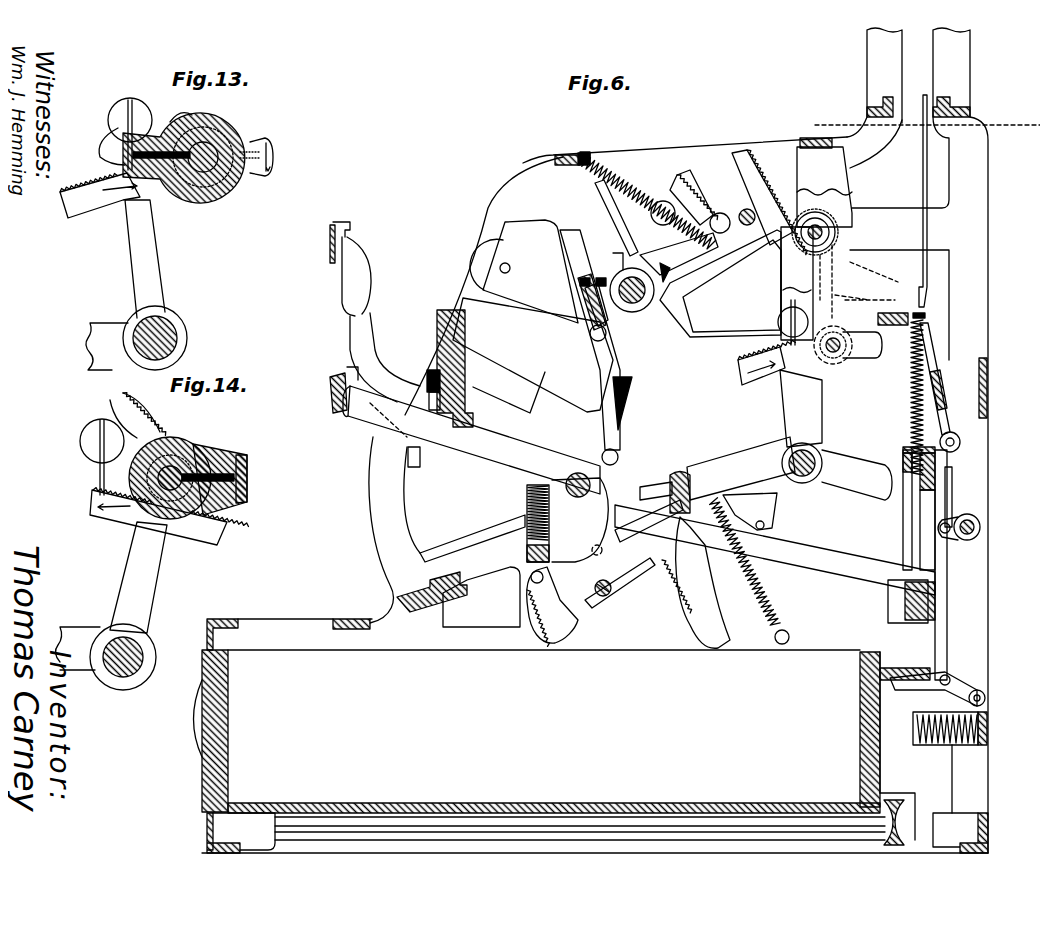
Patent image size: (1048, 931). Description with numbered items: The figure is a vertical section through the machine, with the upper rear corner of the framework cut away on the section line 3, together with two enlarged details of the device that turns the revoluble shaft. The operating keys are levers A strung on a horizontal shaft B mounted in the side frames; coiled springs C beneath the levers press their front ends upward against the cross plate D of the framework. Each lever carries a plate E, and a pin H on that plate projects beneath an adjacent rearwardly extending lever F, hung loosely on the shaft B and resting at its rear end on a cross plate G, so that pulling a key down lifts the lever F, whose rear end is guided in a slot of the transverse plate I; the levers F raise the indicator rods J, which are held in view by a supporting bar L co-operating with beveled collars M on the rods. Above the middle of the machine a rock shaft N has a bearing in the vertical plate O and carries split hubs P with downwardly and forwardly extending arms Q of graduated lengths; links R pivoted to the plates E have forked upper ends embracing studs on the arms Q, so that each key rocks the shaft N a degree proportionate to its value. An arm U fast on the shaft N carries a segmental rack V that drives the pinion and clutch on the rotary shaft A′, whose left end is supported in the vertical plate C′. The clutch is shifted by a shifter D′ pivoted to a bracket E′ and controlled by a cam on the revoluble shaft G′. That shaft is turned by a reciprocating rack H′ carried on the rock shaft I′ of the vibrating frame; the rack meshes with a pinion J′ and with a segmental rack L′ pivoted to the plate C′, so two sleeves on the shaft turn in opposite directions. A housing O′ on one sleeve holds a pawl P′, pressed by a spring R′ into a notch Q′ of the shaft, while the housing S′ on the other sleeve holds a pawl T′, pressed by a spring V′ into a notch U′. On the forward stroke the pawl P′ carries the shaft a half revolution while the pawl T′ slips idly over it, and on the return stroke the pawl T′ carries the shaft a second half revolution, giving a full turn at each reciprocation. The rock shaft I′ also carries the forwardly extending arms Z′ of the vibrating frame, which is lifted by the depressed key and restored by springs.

In FIG. 6, the section line 3— 3 is at (781, 440).
In FIG. 6, the key levers A is at (471, 390).
In FIG. 6, the horizontal shaft B is at (570, 478).
In FIG. 6, the coiled springs C is at (527, 533).
In FIG. 6, the cross plate D is at (467, 378).
In FIG. 6, the key lever plates E is at (580, 520).
In FIG. 6, the rearwardly extending levers F is at (803, 552).
In FIG. 6, the cross plate G is at (905, 603).
In FIG. 6, the pin H is at (590, 550).
In FIG. 6, the slotted guide plate I is at (905, 500).
In FIG. 6, the indicator rods J is at (918, 522).
In FIG. 6, the supporting bar L is at (947, 380).
In FIG. 6, the beveled collars M is at (952, 452).
In FIG. 6, the rock shaft N is at (648, 303).
In FIG. 6, the vertical plate O is at (667, 348).
In FIG. 6, the split hubs P is at (618, 258).
In FIG. 6, the arms Q is at (622, 316).
In FIG. 6, the links R is at (600, 372).
In FIG. 6, the screw S is at (582, 306).
In FIG. 6, the arm U is at (710, 283).
In FIG. 6, the segmental rack V is at (750, 172).
In FIG. 6, the rotary shaft A′ is at (825, 232).
In FIG. 6, the vertical plate C′ is at (824, 187).
In FIG. 6, the clutch shifter D′ is at (797, 283).
In FIG. 6, the bracket E′ is at (865, 290).
In FIG. 13, the revoluble shaft G′ is at (232, 196).
In FIG. 14, the revoluble shaft G′ is at (178, 462).
In FIG. 6, the revoluble shaft G′ is at (845, 360).
In FIG. 13, the reciprocating rack H′ is at (103, 205).
In FIG. 14, the reciprocating rack H′ is at (190, 535).
In FIG. 6, the reciprocating rack H′ is at (756, 366).
In FIG. 13, the rock shaft I′ is at (178, 337).
In FIG. 14, the rock shaft I′ is at (145, 652).
In FIG. 6, the rock shaft I′ is at (822, 463).
In FIG. 13, the pinion J′ is at (207, 140).
In FIG. 14, the pinion J′ is at (170, 463).
In FIG. 6, the pinion J′ is at (833, 355).
In FIG. 13, the segmental rack L′ is at (103, 150).
In FIG. 14, the segmental rack L′ is at (112, 410).
In FIG. 6, the segmental rack L′ is at (793, 329).
In FIG. 13, the pawl housing O′ is at (217, 195).
In FIG. 14, the pawl housing O′ is at (210, 470).
In FIG. 13, the pawl P′ is at (178, 190).
In FIG. 14, the pawl P′ is at (232, 470).
In FIG. 13, the notch Q′ is at (198, 190).
In FIG. 14, the notch Q′ is at (190, 470).
In FIG. 13, the spring R′ is at (158, 128).
In FIG. 14, the spring R′ is at (244, 470).
In FIG. 13, the pawl housing S′ is at (243, 176).
In FIG. 14, the pawl housing S′ is at (98, 473).
In FIG. 6, the pawl housing S′ is at (862, 345).
In FIG. 13, the pawl T′ is at (250, 140).
In FIG. 14, the pawl T′ is at (125, 515).
In FIG. 13, the notch U′ is at (230, 127).
In FIG. 13, the spring V′ is at (267, 138).
In FIG. 14, the spring V′ is at (95, 505).
In FIG. 13, the arms of vibrating frame Z′ is at (110, 333).
In FIG. 14, the arms of vibrating frame Z′ is at (92, 640).
In FIG. 6, the arms of vibrating frame Z′ is at (789, 483).